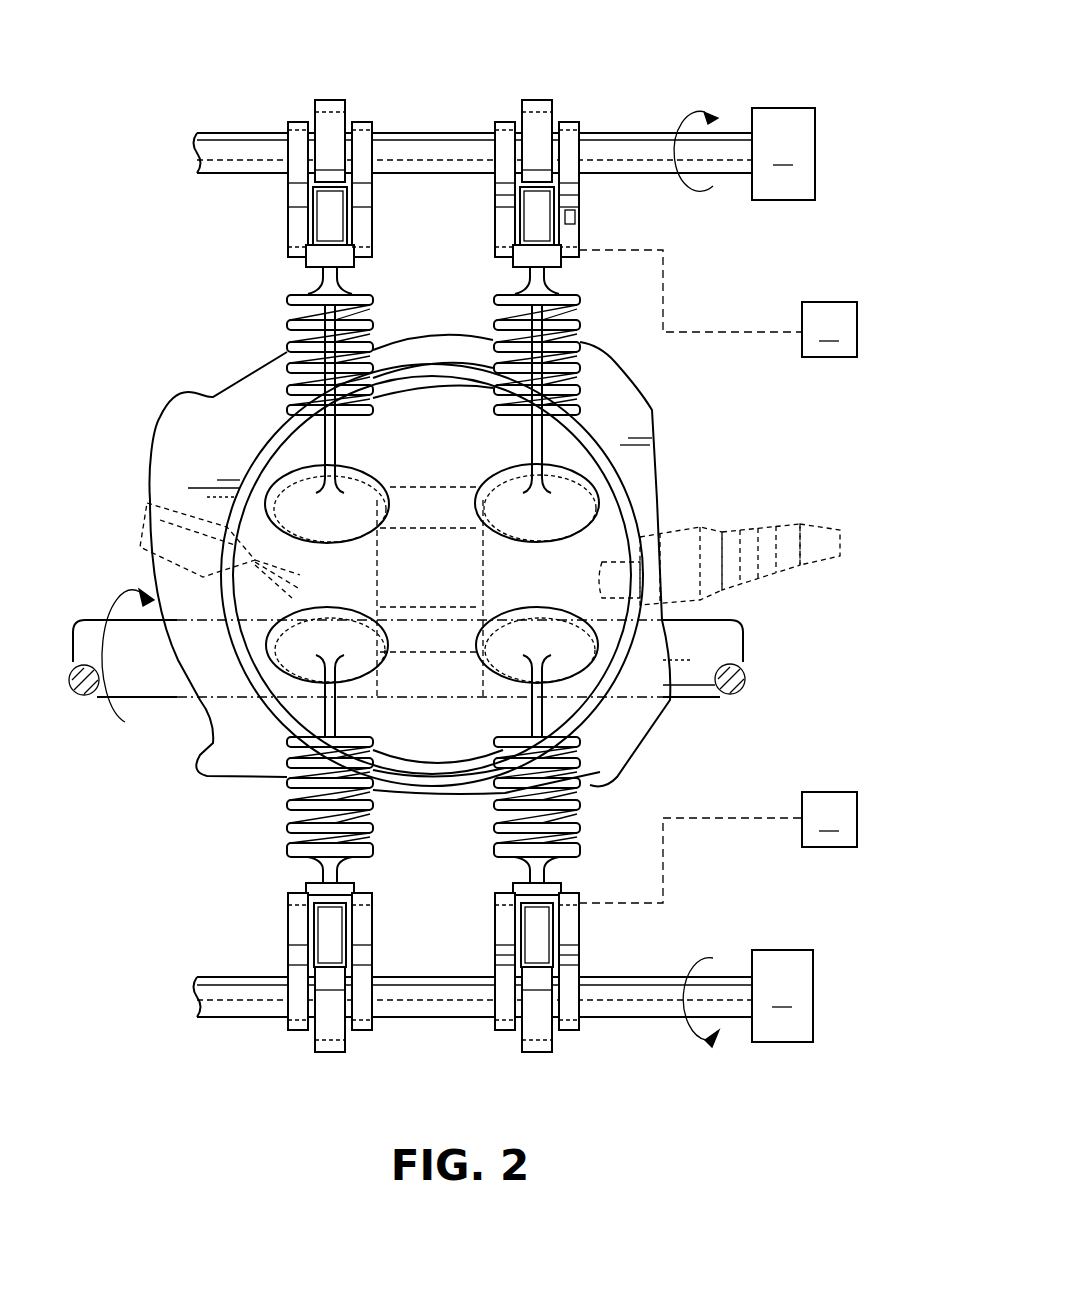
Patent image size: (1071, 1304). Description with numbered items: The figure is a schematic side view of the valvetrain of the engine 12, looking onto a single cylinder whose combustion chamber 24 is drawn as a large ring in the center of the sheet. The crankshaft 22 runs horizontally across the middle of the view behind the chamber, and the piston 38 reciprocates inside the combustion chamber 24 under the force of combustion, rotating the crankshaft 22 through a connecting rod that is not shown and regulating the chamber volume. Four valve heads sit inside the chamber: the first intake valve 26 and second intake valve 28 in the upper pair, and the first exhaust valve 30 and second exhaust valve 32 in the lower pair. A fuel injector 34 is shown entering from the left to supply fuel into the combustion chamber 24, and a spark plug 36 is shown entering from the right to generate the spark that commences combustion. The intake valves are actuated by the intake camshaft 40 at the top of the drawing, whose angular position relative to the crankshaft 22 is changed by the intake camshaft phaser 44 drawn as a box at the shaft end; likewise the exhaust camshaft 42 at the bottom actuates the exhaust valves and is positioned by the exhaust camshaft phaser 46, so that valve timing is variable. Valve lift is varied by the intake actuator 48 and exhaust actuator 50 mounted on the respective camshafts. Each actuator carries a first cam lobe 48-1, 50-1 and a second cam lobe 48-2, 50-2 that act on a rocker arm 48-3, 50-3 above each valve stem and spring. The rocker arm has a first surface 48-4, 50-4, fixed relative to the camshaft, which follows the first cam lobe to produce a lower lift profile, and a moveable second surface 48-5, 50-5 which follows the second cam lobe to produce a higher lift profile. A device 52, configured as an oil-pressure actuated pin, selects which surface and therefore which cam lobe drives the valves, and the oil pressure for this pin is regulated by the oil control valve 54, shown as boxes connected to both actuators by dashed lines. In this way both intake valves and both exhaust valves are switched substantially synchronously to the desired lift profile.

The engine 12 is at (848, 265).
The crankshaft 22 is at (708, 680).
The combustion chamber 24 is at (250, 462).
The first intake valve 26 is at (362, 497).
The second intake valve 28 is at (575, 497).
The first exhaust valve 30 is at (355, 668).
The second exhaust valve 32 is at (582, 665).
The fuel injector 34 is at (150, 542).
The spark plug 36 is at (750, 540).
The piston 38 is at (218, 603).
The intake camshaft 40 is at (440, 148).
The exhaust camshaft 42 is at (437, 1003).
The intake camshaft phaser 44 is at (783, 154).
The exhaust camshaft phaser 46 is at (782, 996).
The intake actuator 48 is at (544, 214).
The first cam lobe 48-1 is at (537, 103).
The second cam lobe 48-2 is at (503, 123).
The rocker arm 48-3 is at (520, 252).
The first surface 48-4 is at (535, 205).
The second surface 48-5 is at (497, 200).
The exhaust actuator 50 is at (544, 933).
The first cam lobe 50-1 is at (537, 1050).
The second cam lobe 50-2 is at (505, 1030).
The rocker arm 50-3 is at (497, 905).
The first surface 50-4 is at (537, 960).
The second surface 50-5 is at (497, 945).
The device 52 is at (575, 222).
The oil control valve 54 is at (718, 576).